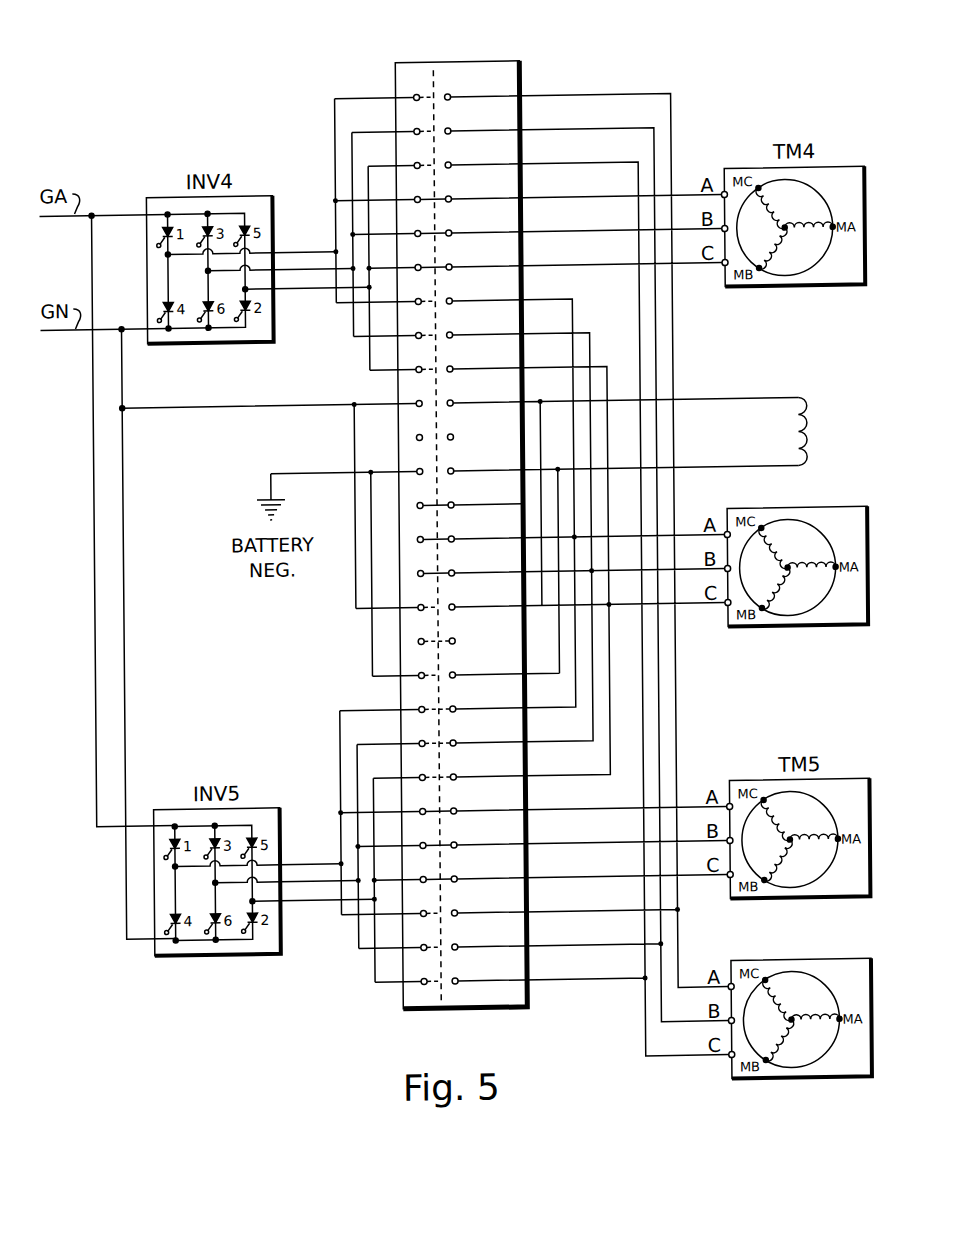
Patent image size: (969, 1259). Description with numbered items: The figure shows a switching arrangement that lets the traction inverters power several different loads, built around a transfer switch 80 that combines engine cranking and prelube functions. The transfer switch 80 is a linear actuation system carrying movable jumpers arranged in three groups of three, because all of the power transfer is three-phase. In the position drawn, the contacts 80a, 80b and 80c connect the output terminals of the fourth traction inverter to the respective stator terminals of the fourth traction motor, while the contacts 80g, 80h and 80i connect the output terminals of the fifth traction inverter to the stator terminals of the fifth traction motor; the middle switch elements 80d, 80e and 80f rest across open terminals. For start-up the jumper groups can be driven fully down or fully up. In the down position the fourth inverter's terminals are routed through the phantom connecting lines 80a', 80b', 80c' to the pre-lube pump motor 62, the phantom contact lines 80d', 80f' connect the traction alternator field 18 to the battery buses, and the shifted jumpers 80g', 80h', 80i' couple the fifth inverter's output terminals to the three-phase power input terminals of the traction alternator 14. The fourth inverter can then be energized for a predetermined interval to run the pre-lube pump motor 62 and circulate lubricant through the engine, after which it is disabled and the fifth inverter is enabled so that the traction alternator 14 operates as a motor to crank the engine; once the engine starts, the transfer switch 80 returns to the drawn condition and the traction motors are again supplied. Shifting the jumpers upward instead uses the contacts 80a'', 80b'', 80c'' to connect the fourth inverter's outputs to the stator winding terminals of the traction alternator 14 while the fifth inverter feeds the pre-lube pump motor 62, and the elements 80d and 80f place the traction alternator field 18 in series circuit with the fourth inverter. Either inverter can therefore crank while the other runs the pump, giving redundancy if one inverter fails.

The transfer switch 80 is at (399, 72).
The transfer switch contact 80a'' is at (460, 84).
The transfer switch contact 80b'' is at (461, 119).
The transfer switch contact 80c'' is at (460, 152).
The transfer switch contact 80a is at (455, 186).
The transfer switch contact 80b is at (456, 220).
The transfer switch contact 80c is at (455, 254).
The phantom connecting line 80a' is at (459, 288).
The phantom connecting line 80b' is at (459, 322).
The phantom connecting line 80c' is at (459, 356).
The switch element 80d is at (458, 492).
The switch element 80e is at (458, 521).
The switch element 80f is at (455, 560).
The phantom connecting contact line 80d' is at (462, 594).
The phantom connecting contact line 80f' is at (459, 662).
The transfer switch contact 80g is at (460, 798).
The transfer switch contact 80h is at (461, 832).
The transfer switch contact 80i is at (457, 866).
The transfer switch contact 80g' is at (464, 900).
The transfer switch contact 80h' is at (465, 934).
The transfer switch contact 80i' is at (461, 968).
The traction alternator field 18 is at (809, 428).
The pre-lube pump motor 62 is at (797, 633).
The traction alternator 14 is at (783, 1084).